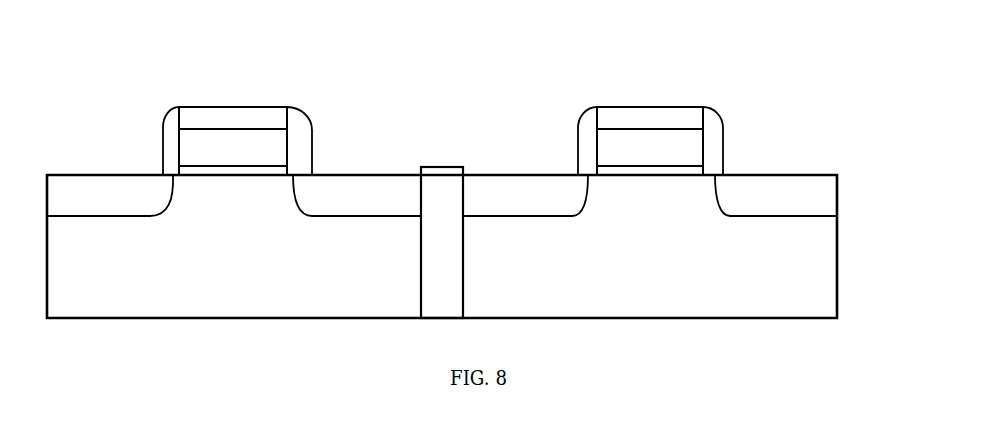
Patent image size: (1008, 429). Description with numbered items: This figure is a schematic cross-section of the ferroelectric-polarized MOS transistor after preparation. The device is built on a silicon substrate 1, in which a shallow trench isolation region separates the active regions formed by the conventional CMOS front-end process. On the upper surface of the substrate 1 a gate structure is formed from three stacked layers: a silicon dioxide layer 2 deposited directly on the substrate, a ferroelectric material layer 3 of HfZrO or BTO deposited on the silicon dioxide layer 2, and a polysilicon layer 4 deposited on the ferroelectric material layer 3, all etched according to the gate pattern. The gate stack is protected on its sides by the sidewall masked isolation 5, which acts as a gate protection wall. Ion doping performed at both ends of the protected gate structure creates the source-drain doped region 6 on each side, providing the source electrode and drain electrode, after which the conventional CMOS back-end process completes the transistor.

The substrate 1 is at (772, 265).
The SiO2 layer 2 is at (703, 170).
The ferroelectric material layer 3 is at (703, 125).
The polysilicon layer 4 is at (617, 121).
The sidewall masked isolation 5 is at (577, 143).
The source-drain doped region 6 is at (507, 173).